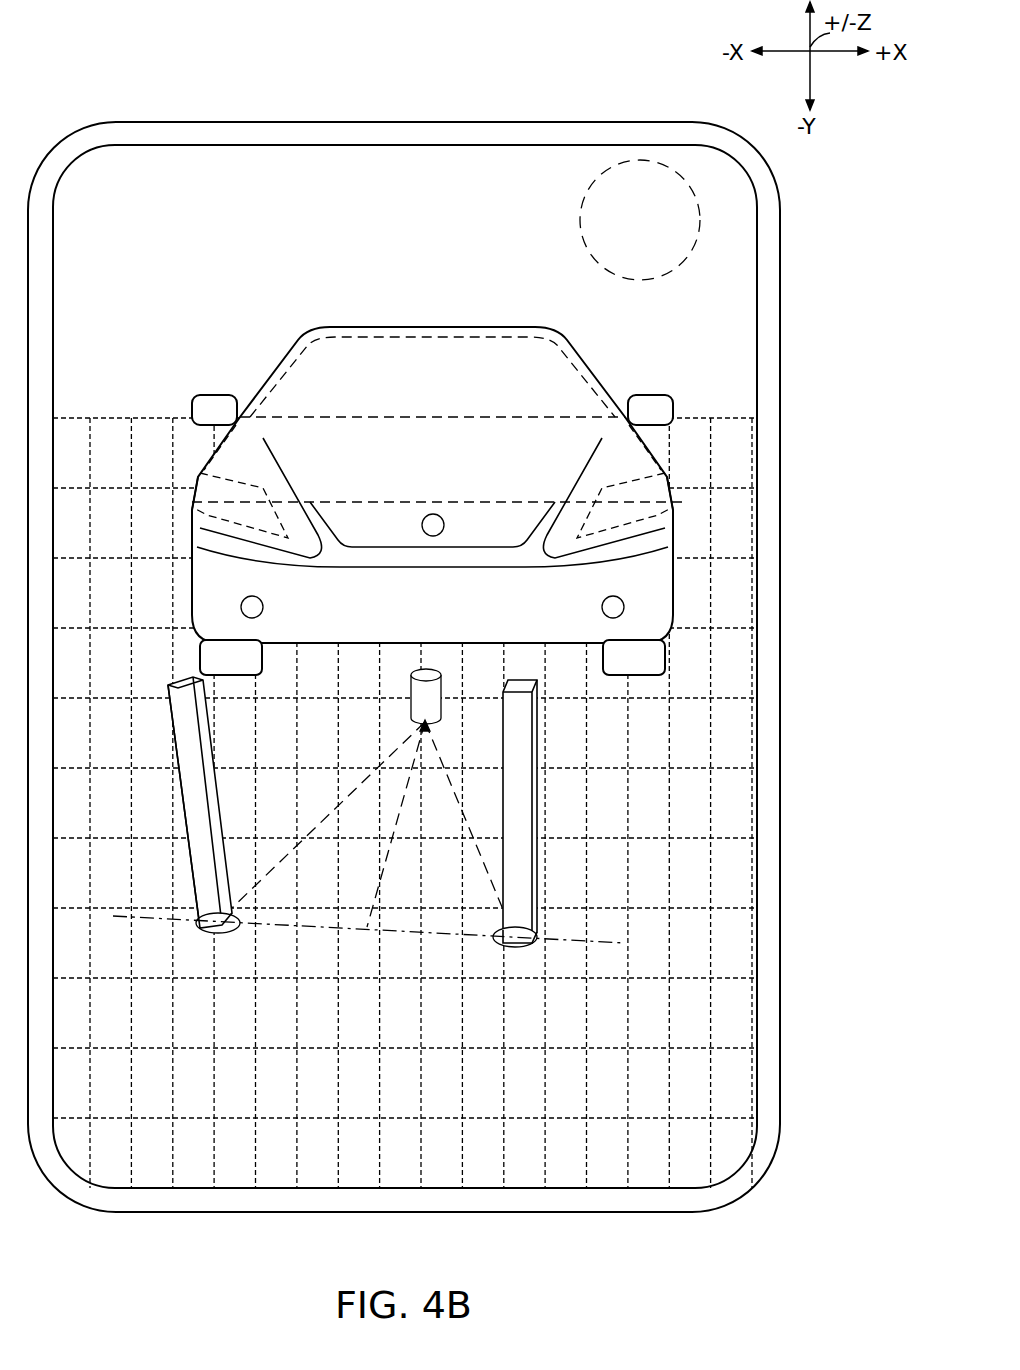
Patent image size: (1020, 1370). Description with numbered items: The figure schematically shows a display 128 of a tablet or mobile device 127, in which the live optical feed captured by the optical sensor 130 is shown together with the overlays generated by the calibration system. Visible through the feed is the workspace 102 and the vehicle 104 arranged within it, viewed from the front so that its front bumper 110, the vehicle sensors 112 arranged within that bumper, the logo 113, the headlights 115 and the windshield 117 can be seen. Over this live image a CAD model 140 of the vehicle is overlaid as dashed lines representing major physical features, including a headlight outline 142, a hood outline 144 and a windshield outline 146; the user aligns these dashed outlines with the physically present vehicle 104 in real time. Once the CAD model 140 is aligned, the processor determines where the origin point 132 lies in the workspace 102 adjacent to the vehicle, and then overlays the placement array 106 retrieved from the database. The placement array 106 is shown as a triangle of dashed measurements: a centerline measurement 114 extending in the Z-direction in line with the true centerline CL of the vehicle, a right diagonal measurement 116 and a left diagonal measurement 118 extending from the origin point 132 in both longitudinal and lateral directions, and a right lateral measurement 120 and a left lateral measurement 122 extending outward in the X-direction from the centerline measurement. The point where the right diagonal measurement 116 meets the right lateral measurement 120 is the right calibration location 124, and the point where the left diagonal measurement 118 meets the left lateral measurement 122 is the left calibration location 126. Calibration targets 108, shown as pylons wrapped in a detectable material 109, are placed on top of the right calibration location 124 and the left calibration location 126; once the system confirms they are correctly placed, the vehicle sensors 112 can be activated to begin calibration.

The workspace 102 is at (745, 947).
The vehicle 104 is at (411, 326).
The placement array 106 is at (333, 932).
The calibration targets 108 is at (356, 810).
The material 109 is at (185, 808).
The front bumper 110 is at (486, 560).
The vehicle sensors 112 is at (264, 607).
The logo 113 is at (433, 513).
The centerline measurement 114 is at (378, 888).
The headlights 115 is at (194, 480).
The right diagonal measurement 116 is at (458, 798).
The windshield 117 is at (485, 347).
The left diagonal measurement 118 is at (338, 804).
The right lateral measurement 120 is at (400, 935).
The left lateral measurement 122 is at (280, 925).
The right calibration location 124 is at (520, 948).
The left calibration location 126 is at (210, 935).
The device 127 is at (780, 346).
The display 128 is at (758, 450).
The optical sensor 130 is at (581, 205).
The origin point 132 is at (423, 668).
The CAD model 140 is at (431, 471).
The headlight outline 142 is at (213, 517).
The hood outline 144 is at (508, 500).
The windshield outline 146 is at (375, 336).
The true centerline CL is at (444, 670).